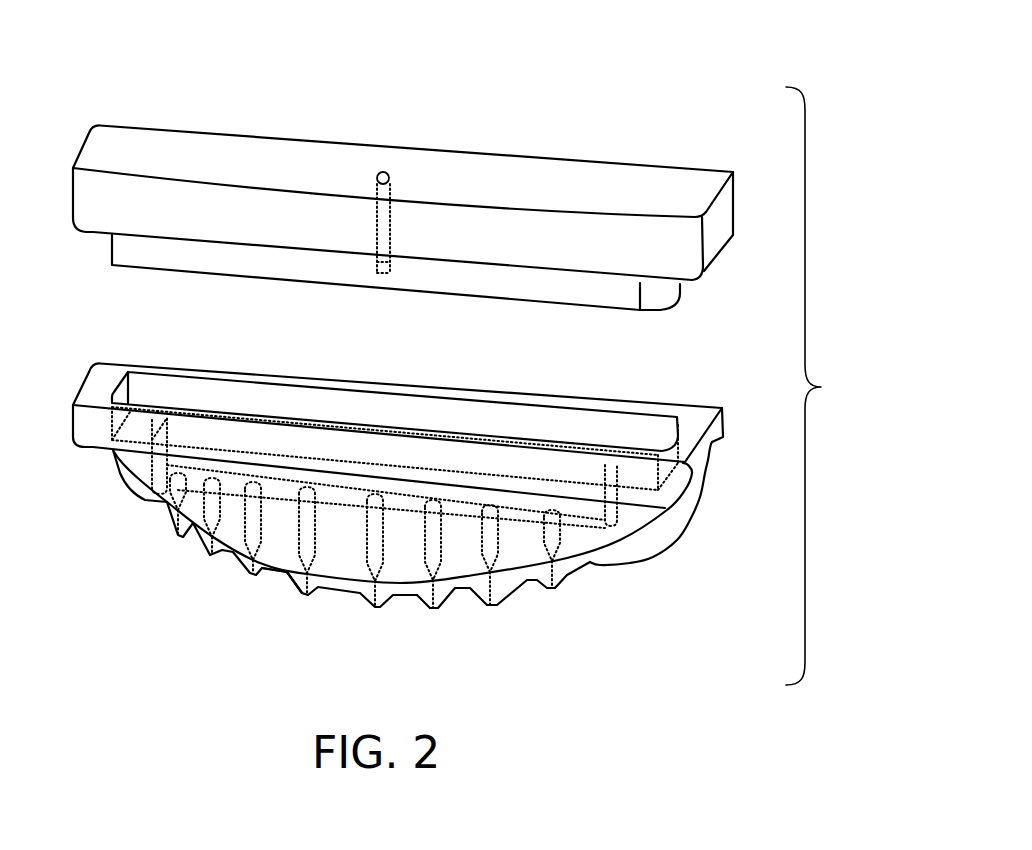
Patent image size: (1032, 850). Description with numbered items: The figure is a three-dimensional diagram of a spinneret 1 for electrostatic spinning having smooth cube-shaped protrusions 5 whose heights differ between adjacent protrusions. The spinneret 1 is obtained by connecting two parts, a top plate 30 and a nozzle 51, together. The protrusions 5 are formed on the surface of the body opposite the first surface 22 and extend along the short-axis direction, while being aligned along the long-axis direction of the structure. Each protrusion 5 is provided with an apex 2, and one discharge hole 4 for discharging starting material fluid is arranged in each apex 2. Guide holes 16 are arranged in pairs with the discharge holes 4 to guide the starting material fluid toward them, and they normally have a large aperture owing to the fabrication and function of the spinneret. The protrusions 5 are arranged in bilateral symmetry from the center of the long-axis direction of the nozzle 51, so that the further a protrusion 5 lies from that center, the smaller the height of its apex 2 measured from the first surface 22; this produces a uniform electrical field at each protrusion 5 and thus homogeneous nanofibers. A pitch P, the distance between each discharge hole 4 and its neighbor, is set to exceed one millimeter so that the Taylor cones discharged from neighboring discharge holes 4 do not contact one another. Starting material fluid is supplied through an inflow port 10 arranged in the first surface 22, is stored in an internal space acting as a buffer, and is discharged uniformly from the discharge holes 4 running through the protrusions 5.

The spinneret for electrostatic spinning 1 is at (607, 60).
The first surface 22 is at (487, 172).
The top plate 30 is at (93, 240).
The inflow port 10 is at (388, 275).
The nozzle 51 is at (87, 458).
The guide holes 16 is at (553, 528).
The apex 2 is at (375, 613).
The discharge hole 4 is at (210, 555).
The protrusions 5 is at (293, 587).
The pitch P is at (433, 608).